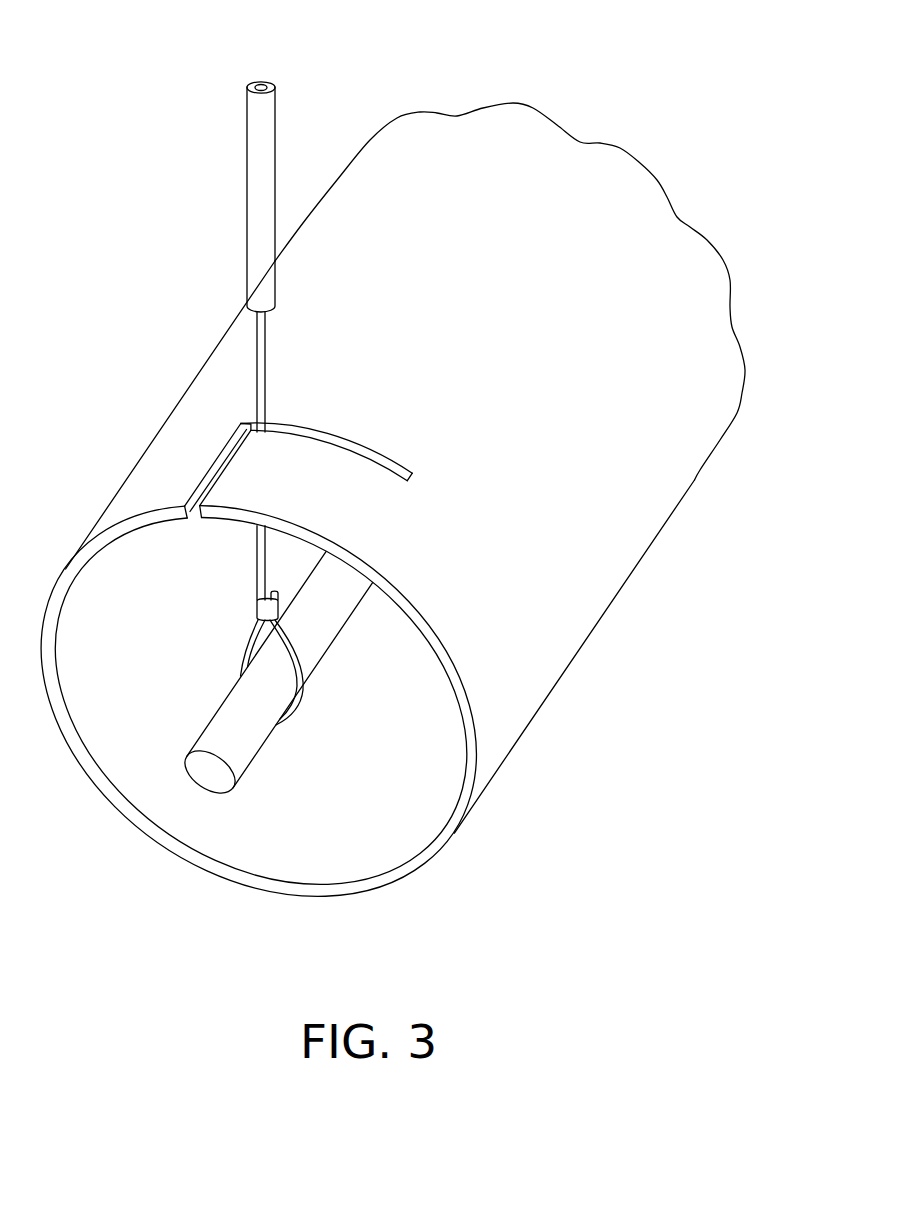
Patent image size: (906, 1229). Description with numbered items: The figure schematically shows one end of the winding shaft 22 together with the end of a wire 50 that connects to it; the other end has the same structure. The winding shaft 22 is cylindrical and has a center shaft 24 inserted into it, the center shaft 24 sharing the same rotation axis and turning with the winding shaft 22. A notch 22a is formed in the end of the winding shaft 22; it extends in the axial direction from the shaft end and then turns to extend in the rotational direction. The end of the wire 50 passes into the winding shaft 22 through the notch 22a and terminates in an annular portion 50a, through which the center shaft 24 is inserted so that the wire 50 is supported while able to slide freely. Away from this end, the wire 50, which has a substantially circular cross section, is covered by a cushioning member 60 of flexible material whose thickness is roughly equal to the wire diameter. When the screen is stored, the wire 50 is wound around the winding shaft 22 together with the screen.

The winding shaft 22 is at (657, 492).
The notch 22a is at (411, 474).
The center shaft 24 is at (247, 743).
The wire 50 is at (256, 81).
The annular portion 50a is at (302, 703).
The cushioning member 60 is at (251, 84).